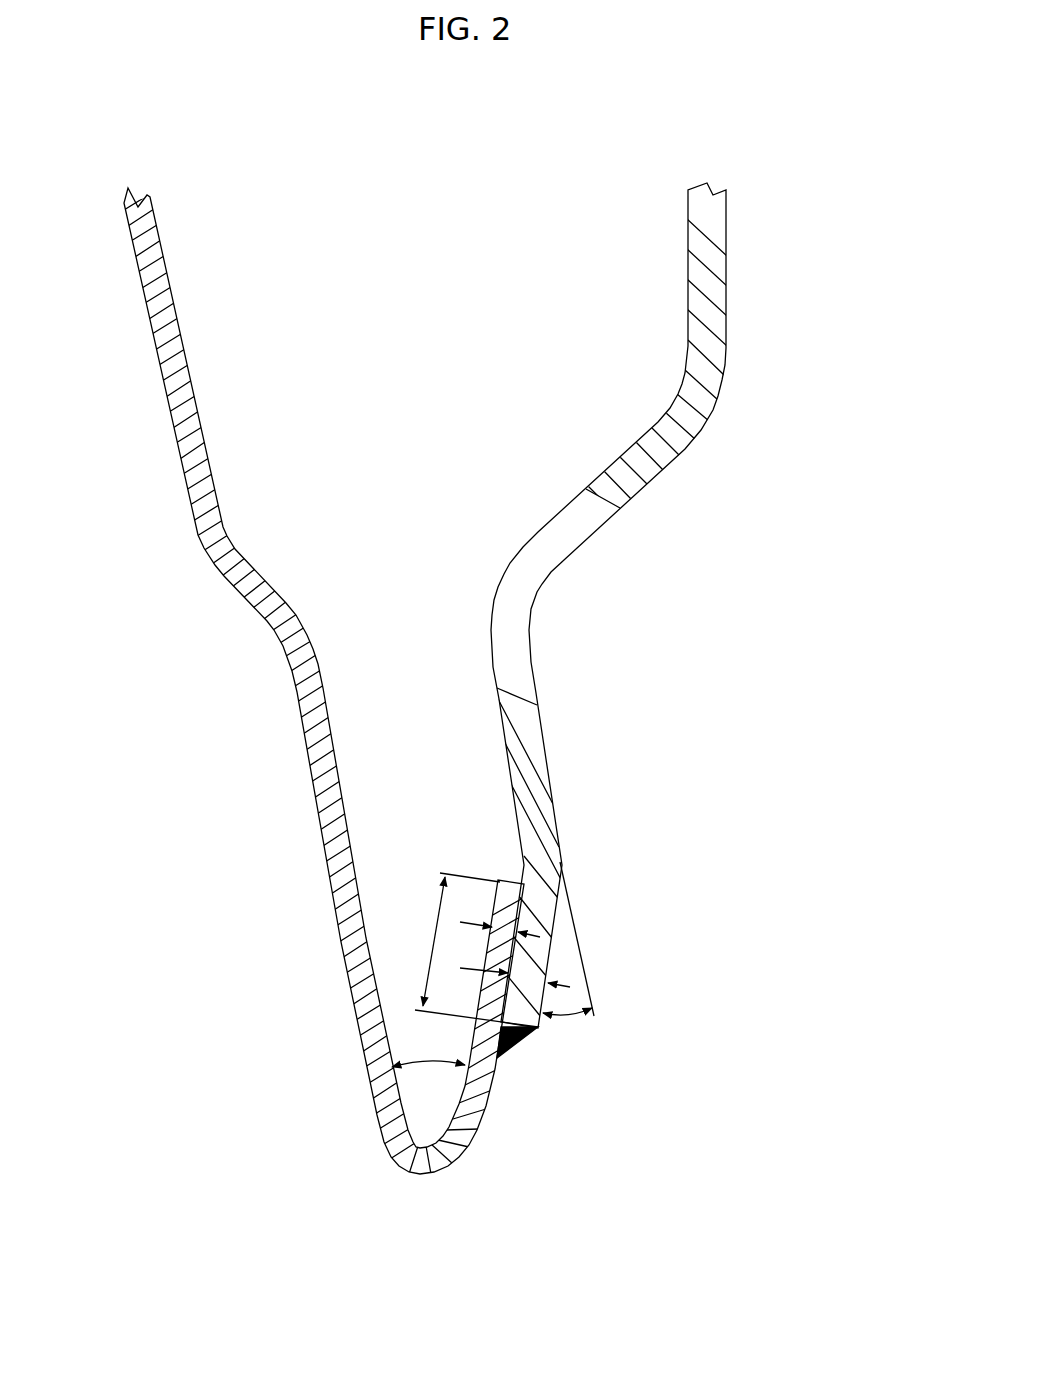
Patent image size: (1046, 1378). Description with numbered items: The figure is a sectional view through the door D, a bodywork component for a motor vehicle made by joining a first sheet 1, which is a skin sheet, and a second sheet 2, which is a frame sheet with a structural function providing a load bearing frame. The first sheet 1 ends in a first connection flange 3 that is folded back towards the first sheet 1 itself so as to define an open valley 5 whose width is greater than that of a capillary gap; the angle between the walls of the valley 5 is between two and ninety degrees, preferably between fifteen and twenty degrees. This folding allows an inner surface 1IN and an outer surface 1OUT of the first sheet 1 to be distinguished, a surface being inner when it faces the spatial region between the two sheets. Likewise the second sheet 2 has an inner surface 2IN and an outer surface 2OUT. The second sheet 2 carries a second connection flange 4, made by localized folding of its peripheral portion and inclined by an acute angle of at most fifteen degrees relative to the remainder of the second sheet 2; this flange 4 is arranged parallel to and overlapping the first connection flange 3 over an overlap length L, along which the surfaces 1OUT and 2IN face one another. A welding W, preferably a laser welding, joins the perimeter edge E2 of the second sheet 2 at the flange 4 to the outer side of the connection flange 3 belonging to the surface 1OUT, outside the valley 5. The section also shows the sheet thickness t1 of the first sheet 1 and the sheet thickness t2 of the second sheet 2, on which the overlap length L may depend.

The door D is at (566, 193).
The first sheet 1 is at (366, 699).
The second sheet 2 is at (690, 450).
The first connection flange 3 is at (493, 1062).
The second connection flange 4 is at (535, 962).
The valley 5 is at (433, 1125).
The inner surface 1IN is at (343, 822).
The outer surface 1OUT is at (340, 928).
The inner surface 2IN is at (500, 732).
The outer surface 2OUT is at (543, 730).
The overlap length L is at (474, 950).
The sheet thickness t1 is at (525, 915).
The sheet thickness t2 is at (507, 970).
The perimeter edge E2 is at (540, 1028).
The welding W is at (522, 1052).